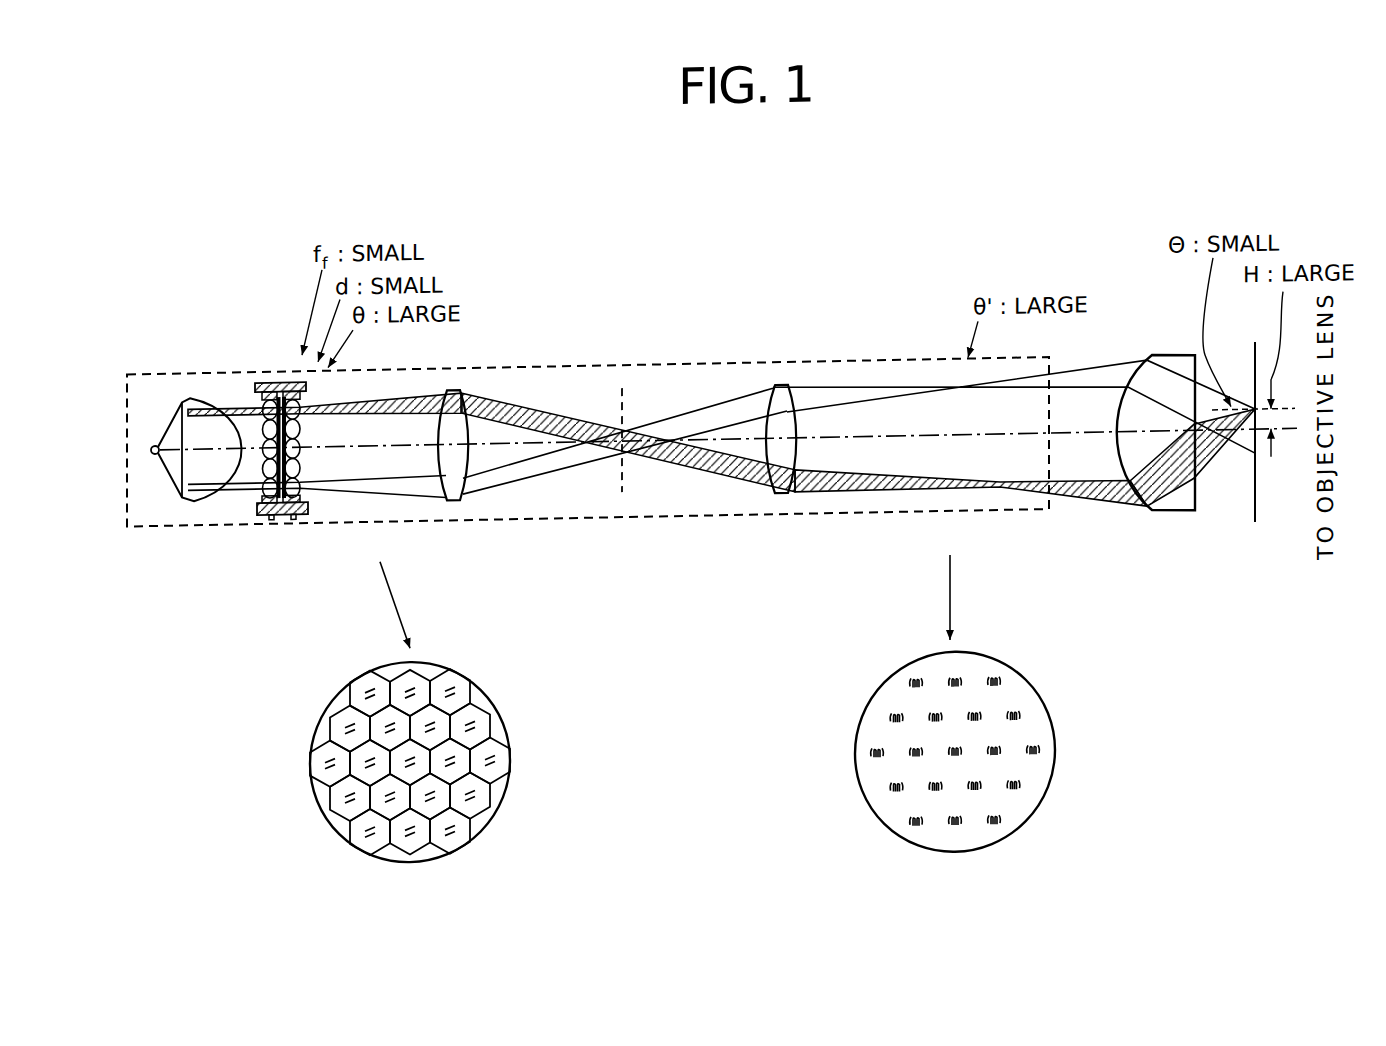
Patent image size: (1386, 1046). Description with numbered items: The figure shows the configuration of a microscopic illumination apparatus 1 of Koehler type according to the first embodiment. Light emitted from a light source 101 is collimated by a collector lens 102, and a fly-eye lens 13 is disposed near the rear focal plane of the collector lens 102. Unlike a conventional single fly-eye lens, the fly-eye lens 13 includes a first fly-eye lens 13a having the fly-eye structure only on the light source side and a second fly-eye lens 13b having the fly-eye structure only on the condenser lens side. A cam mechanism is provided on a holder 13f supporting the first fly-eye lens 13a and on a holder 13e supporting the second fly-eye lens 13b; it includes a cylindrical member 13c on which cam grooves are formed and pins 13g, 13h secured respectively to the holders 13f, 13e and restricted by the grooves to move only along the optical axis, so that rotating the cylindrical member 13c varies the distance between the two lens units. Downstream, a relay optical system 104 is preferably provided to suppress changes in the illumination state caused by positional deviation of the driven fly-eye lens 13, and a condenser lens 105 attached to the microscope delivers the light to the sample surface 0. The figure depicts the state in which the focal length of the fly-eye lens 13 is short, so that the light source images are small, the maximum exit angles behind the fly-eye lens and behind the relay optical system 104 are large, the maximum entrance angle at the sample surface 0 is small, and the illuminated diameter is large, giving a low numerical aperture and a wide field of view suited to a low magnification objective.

The microscopic illumination apparatus 1 is at (855, 375).
The sample surface 0 is at (1252, 374).
The fly-eye lens 13 is at (294, 439).
The first fly-eye lens 13a is at (262, 469).
The second fly-eye lens 13b is at (300, 434).
The cylindrical member 13c is at (308, 508).
The holder 13e is at (307, 391).
The holder 13f is at (262, 395).
The pin 13g is at (272, 523).
The pin 13h is at (295, 524).
The light source 101 is at (156, 446).
The collector lens 102 is at (194, 401).
The relay optical system 104 is at (778, 342).
The condenser lens 105 is at (1178, 374).